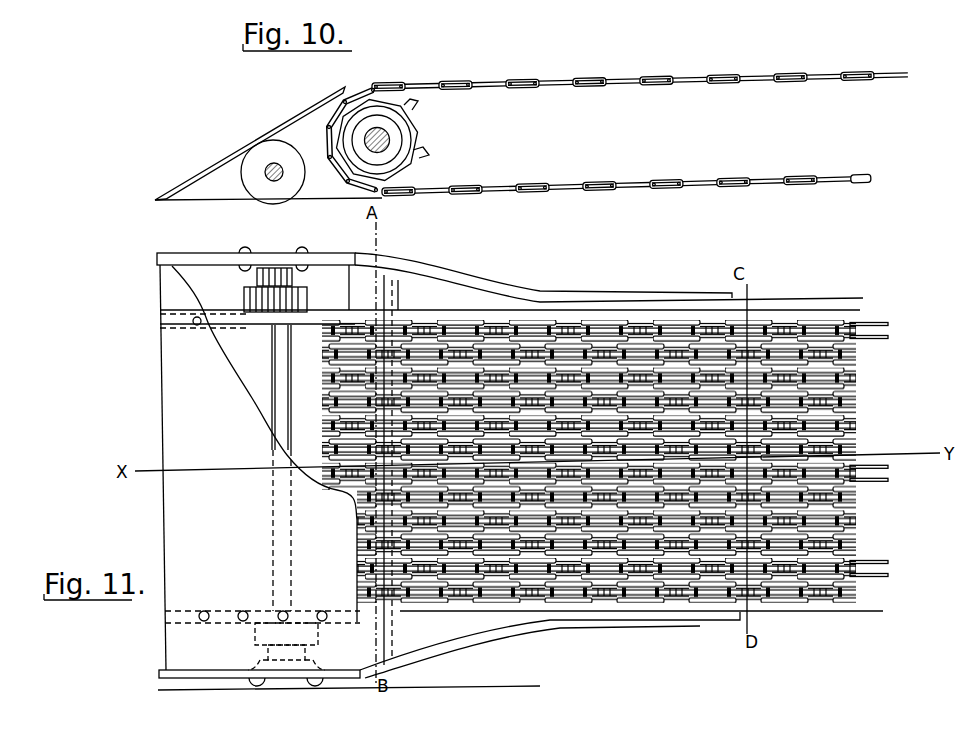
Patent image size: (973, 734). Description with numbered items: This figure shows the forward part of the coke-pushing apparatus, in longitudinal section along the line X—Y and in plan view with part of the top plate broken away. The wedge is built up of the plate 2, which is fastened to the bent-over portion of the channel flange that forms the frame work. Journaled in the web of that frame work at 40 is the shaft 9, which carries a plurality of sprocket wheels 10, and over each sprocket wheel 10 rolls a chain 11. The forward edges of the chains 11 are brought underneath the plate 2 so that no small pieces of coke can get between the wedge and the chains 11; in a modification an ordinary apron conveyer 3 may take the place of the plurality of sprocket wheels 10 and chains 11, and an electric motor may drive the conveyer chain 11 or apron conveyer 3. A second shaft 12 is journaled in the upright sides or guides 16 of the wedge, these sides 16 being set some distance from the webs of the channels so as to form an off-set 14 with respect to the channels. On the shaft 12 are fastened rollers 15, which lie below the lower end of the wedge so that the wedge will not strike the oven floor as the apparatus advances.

In FIG. 10, the plate 2 is at (206, 166).
In FIG. 11, the plate 2 is at (218, 394).
In FIG. 11, the apron conveyer 3 is at (412, 320).
In FIG. 10, the shaft 9 is at (416, 156).
In FIG. 11, the shaft 9 is at (386, 282).
In FIG. 10, the sprocket wheel 10 is at (421, 141).
In FIG. 10, the chain 11 is at (594, 79).
In FIG. 11, the chain 11 is at (862, 333).
In FIG. 10, the second shaft 12 is at (284, 162).
In FIG. 11, the second shaft 12 is at (292, 406).
In FIG. 11, the off-set 14 is at (351, 274).
In FIG. 10, the roller 15 is at (268, 199).
In FIG. 11, the roller 15 is at (310, 299).
In FIG. 11, the upright side or guide 16 is at (200, 253).
In FIG. 11, the journal 40 is at (394, 291).